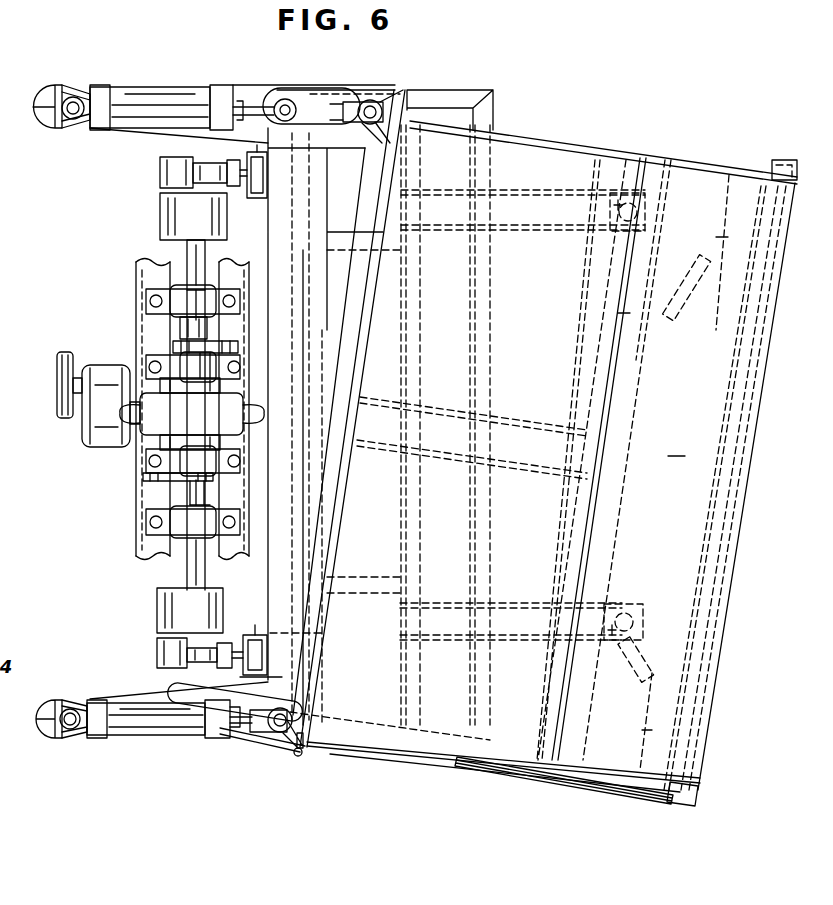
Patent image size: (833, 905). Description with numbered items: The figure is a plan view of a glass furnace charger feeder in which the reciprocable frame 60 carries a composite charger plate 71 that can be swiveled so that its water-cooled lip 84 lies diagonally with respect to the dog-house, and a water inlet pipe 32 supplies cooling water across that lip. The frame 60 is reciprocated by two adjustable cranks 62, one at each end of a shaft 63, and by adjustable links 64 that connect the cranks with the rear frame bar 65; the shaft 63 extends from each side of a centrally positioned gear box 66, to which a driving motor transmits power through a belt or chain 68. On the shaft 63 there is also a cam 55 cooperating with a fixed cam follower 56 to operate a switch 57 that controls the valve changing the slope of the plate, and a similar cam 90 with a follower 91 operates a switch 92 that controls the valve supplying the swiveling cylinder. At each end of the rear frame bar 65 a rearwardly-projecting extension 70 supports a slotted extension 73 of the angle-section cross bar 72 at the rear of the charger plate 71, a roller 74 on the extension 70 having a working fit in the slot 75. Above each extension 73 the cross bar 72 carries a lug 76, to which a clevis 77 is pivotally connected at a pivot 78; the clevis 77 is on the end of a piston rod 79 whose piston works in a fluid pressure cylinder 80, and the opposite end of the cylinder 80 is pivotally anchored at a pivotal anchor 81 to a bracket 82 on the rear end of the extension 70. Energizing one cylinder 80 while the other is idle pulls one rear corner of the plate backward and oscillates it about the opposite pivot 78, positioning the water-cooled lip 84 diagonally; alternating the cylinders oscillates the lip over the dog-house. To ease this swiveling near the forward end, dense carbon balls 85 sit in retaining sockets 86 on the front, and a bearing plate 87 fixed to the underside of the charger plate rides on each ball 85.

The water inlet pipe 32 is at (538, 774).
The cam 55 is at (171, 347).
The cam follower 56 is at (186, 340).
The switch 57 is at (208, 355).
The reciprocable frame 60 is at (601, 150).
The adjustable crank 62 is at (202, 165).
The shaft 63 is at (190, 563).
The adjustable link 64 is at (258, 192).
The rear frame bar 65 is at (300, 227).
The gear box 66 is at (188, 424).
The belt or chain 68 is at (67, 354).
The rearwardly-projecting extension 70 is at (130, 141).
The composite charger plate 71 is at (523, 459).
The cross bar 72 is at (362, 199).
The slotted extension 73 is at (340, 84).
The roller 74 is at (274, 100).
The slot 75 is at (284, 92).
The lug 76 is at (371, 128).
The clevis 77 is at (368, 101).
The pivot 78 is at (377, 104).
The piston rod 79 is at (255, 105).
The fluid pressure cylinder 80 is at (156, 92).
The pivotal anchor 81 is at (77, 99).
The bracket 82 is at (46, 88).
The water-cooled lip 84 is at (742, 565).
The ball 85 is at (618, 200).
The retaining socket 86 is at (608, 226).
The bearing plate 87 is at (730, 237).
The cam 90 is at (150, 480).
The follower 91 is at (186, 488).
The switch 92 is at (213, 468).